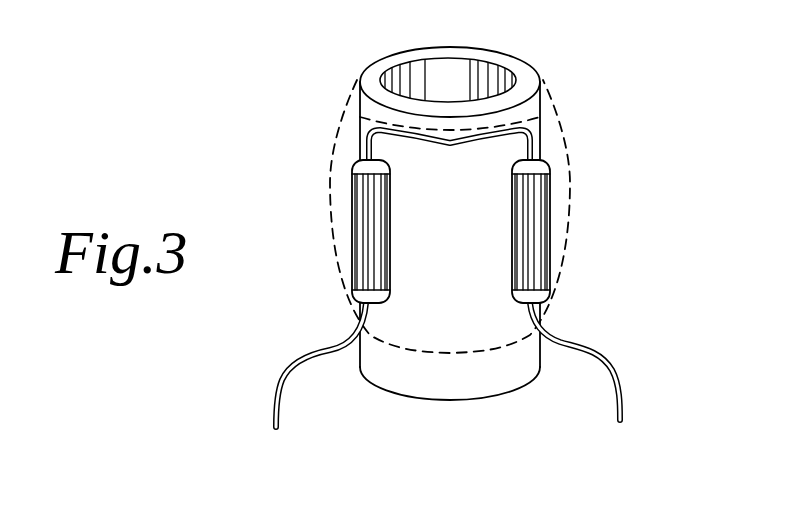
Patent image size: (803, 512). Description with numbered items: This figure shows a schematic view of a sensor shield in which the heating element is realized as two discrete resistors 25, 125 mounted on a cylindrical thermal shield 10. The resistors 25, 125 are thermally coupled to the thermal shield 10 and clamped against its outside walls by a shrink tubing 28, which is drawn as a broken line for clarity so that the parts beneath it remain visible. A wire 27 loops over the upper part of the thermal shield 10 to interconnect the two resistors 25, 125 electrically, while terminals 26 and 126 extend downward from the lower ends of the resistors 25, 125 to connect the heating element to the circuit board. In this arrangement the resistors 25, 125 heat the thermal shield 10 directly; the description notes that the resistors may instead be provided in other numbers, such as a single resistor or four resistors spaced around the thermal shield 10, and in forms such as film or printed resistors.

The thermal shield 10 is at (433, 378).
The resistor 25 is at (368, 277).
The resistor 125 is at (533, 258).
The terminal 26 is at (283, 380).
The terminal 126 is at (617, 368).
The wire 27 is at (453, 140).
The shrink tubing 28 is at (330, 175).